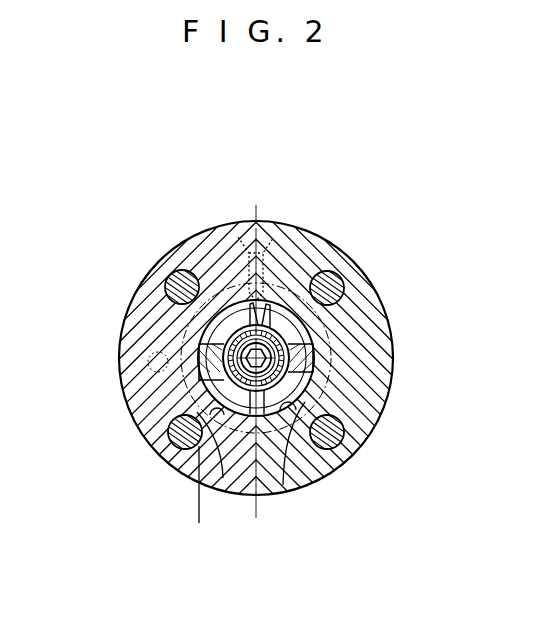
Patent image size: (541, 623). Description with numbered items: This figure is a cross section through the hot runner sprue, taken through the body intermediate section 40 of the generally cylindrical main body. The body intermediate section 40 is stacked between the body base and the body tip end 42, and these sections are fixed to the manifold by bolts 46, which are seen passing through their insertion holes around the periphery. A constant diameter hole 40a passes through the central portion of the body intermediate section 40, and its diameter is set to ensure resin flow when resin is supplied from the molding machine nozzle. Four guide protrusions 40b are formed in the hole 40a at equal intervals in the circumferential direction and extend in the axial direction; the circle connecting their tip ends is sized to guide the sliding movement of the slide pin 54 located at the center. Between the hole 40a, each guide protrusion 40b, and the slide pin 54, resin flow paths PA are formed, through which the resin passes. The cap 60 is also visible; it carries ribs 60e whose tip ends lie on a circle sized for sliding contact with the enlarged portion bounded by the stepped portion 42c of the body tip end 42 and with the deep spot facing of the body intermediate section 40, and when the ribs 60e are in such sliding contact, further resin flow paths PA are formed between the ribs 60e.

The body intermediate section 40 is at (276, 494).
The constant diameter hole 40a is at (320, 480).
The guide protrusions 40b is at (350, 400).
The body tip end 42 is at (196, 447).
The stepped portion 42c is at (203, 506).
The bolts 46 is at (343, 277).
The slide pin 54 is at (262, 320).
The cap 60 is at (200, 397).
The ribs 60e is at (197, 355).
The resin flow paths PA is at (222, 315).